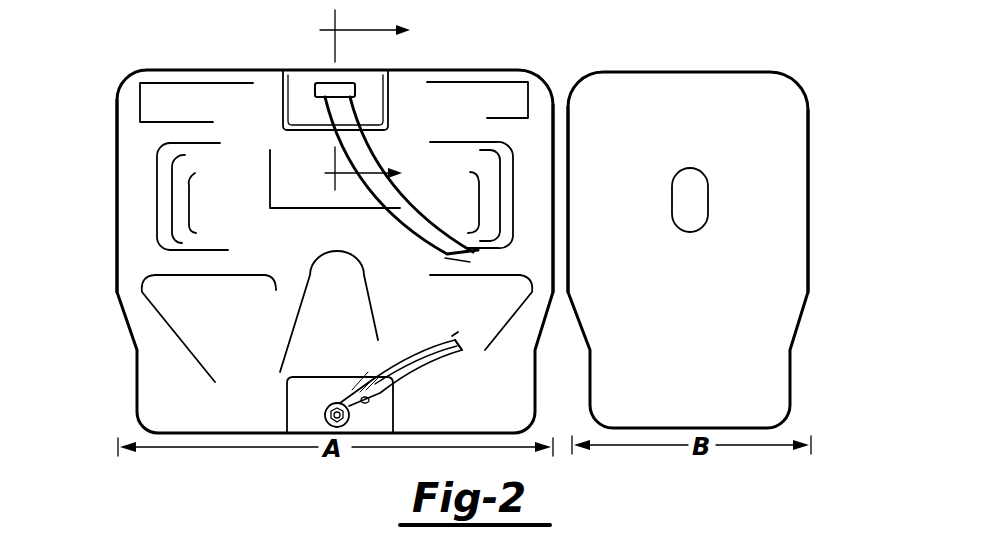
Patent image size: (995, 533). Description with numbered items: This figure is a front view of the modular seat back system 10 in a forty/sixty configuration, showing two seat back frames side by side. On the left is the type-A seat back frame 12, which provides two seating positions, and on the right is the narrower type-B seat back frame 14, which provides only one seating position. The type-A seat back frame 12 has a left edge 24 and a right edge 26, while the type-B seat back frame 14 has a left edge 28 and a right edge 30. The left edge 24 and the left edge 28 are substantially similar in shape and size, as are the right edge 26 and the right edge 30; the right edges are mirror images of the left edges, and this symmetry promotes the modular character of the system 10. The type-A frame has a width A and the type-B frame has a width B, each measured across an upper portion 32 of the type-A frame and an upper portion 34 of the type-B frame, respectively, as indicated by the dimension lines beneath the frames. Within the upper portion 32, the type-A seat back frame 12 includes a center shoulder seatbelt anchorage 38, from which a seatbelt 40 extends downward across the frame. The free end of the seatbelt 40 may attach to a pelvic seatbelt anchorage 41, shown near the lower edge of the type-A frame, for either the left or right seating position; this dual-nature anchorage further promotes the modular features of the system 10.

The modular seat back system 10 is at (76, 104).
The type-A seat back frame 12 is at (232, 60).
The type-B seat back frame 14 is at (798, 58).
The left edge 24 is at (556, 126).
The right edge 26 is at (116, 130).
The left edge 28 is at (812, 130).
The right edge 30 is at (562, 162).
The upper portion 32 is at (237, 128).
The upper portion 34 is at (663, 110).
The center shoulder seatbelt anchorage 38 is at (318, 86).
The seatbelt 40 is at (415, 212).
The pelvic seatbelt anchorage 41 is at (333, 402).